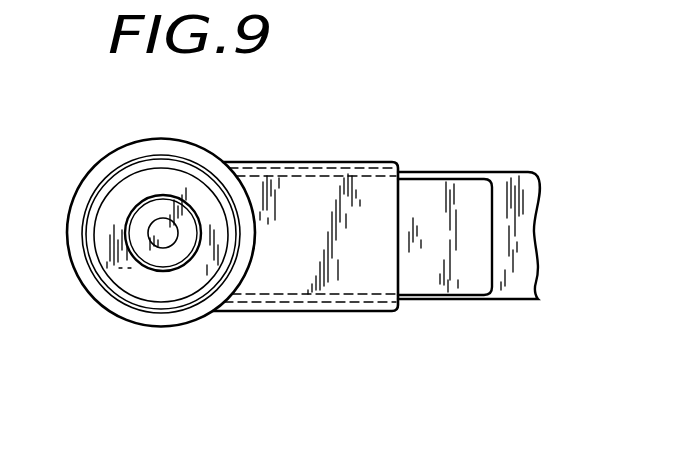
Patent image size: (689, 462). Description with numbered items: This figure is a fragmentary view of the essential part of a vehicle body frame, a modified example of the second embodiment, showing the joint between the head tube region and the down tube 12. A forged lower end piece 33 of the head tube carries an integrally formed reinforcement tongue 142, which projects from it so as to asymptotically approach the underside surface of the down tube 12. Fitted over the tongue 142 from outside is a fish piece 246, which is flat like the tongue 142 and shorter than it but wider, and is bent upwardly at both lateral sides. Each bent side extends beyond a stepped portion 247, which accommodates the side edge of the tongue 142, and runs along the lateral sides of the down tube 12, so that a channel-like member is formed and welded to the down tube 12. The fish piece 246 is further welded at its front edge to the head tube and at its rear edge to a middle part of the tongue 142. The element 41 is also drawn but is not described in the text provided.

The down tube 12 is at (508, 173).
The forged lower end piece 33 is at (168, 330).
The flange 41 is at (83, 290).
The reinforcement tongue 142 is at (428, 285).
The fish piece 246 is at (341, 289).
The stepped portion 247 is at (291, 171).